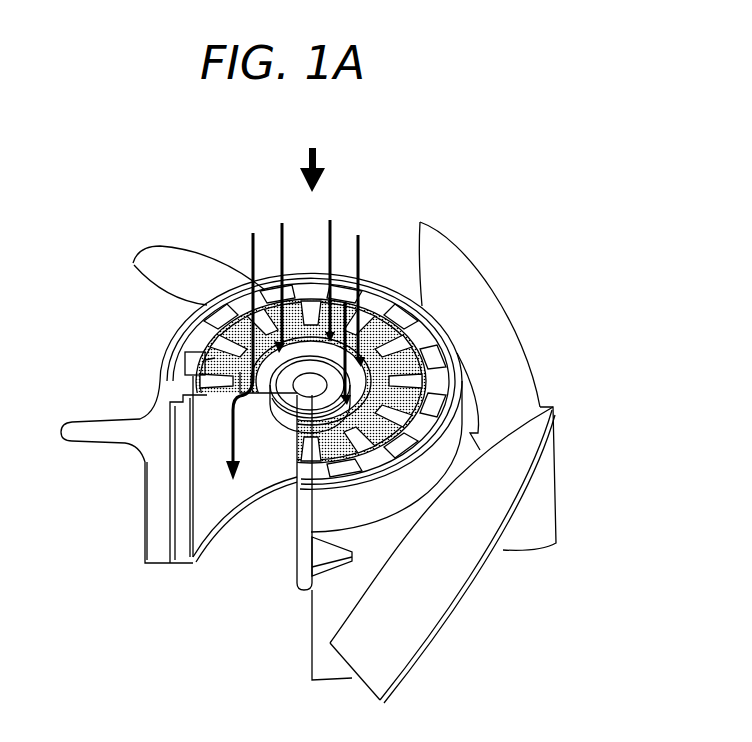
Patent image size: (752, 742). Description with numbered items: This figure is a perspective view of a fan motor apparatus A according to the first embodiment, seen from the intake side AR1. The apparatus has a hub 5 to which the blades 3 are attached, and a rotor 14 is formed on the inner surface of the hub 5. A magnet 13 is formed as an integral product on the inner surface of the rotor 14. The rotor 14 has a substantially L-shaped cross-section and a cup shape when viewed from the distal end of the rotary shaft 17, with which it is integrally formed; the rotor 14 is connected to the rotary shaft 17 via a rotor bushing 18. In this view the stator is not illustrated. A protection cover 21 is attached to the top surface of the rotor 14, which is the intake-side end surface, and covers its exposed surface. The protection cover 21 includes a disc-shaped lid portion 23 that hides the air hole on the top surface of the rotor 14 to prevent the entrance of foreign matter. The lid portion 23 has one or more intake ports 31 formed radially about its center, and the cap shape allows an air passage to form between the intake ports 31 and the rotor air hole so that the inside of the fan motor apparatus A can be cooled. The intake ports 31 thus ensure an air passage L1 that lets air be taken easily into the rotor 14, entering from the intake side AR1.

The fan motor apparatus A is at (504, 192).
The blades 3 is at (493, 330).
The hub 5 is at (150, 494).
The magnet 13 is at (184, 545).
The rotor 14 is at (168, 538).
The rotary shaft 17 is at (297, 575).
The rotor bushing 18 is at (283, 425).
The protection cover 21 is at (196, 356).
The lid portion 23 is at (233, 336).
The intake port 31 is at (327, 333).
The air passage L1 is at (281, 226).
The intake side AR1 is at (322, 164).